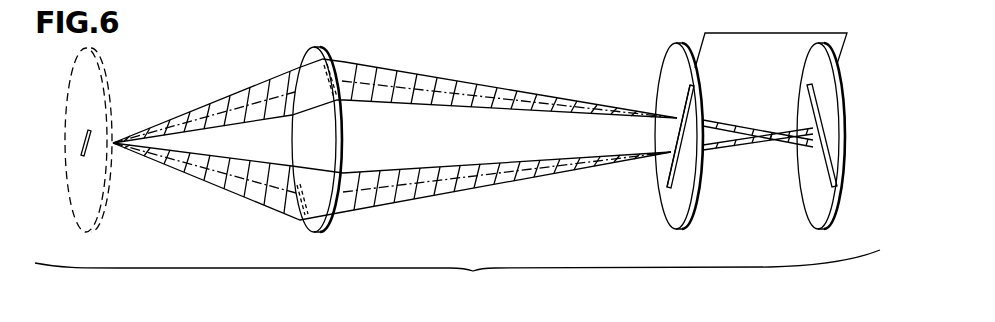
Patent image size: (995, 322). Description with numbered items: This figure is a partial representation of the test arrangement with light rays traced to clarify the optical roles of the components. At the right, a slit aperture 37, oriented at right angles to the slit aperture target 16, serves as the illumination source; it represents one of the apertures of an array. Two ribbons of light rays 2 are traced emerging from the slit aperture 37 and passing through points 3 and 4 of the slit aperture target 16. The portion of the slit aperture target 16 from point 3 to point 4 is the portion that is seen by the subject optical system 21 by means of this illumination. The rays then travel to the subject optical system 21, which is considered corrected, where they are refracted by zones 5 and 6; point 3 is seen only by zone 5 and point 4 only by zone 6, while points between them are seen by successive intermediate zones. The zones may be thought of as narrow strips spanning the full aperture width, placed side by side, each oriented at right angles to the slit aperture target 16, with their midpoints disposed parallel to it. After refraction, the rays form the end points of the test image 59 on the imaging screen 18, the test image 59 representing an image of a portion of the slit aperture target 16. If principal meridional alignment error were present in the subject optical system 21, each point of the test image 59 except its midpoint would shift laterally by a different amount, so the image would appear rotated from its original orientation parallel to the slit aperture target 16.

The test image 59 is at (84, 143).
The imaging screen 18 is at (80, 220).
The ribbons of light rays 2 is at (538, 108).
The subject optical system 21 is at (338, 226).
The zone 5 is at (331, 74).
The zone 6 is at (298, 205).
The slit aperture target 16 is at (665, 176).
The point 3 is at (683, 112).
The point 4 is at (675, 150).
The slit aperture 37 is at (826, 165).